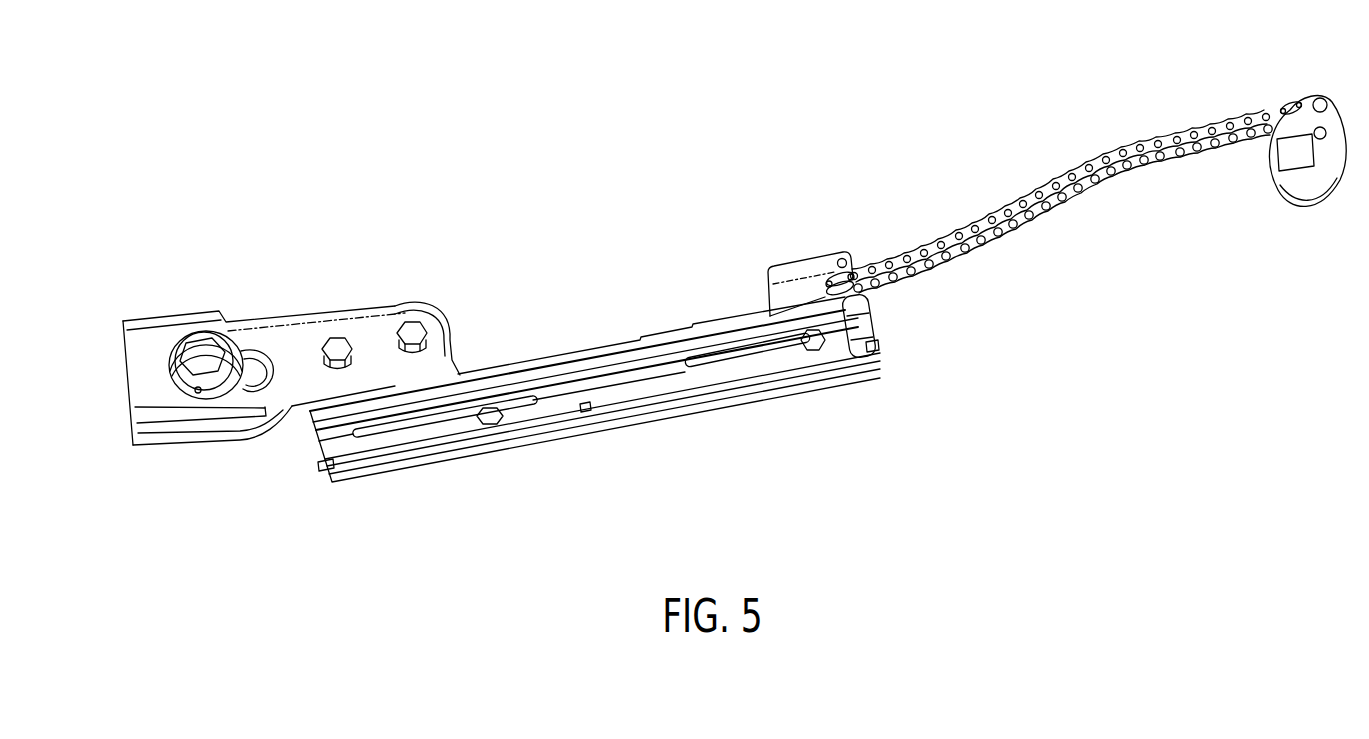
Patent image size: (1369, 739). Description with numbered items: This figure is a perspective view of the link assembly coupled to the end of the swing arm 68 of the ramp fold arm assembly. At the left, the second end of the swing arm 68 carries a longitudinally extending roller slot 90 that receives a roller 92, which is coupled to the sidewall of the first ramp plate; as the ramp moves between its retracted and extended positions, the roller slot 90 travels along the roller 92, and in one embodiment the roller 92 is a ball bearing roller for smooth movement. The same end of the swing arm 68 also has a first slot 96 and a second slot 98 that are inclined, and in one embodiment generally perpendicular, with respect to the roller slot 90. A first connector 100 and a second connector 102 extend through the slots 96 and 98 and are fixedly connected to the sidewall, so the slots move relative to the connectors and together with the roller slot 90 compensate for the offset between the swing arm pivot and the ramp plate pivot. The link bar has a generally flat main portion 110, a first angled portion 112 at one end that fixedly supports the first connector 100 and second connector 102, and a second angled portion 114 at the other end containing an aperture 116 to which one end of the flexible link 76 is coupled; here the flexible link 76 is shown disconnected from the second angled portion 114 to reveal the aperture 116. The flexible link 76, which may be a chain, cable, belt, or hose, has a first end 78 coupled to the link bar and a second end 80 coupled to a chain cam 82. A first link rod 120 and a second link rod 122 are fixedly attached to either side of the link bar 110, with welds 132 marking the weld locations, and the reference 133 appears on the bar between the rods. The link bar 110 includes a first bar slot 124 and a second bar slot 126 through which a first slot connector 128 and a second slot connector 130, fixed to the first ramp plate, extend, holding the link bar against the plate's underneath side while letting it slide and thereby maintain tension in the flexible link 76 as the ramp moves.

The swing arm 68 is at (222, 465).
The flexible link 76 is at (1040, 186).
The first end 78 is at (858, 312).
The second end 80 is at (1305, 100).
The chain cam 82 is at (1298, 172).
The roller slot 90 is at (152, 378).
The roller 92 is at (210, 352).
The first slot 96 is at (334, 343).
The second slot 98 is at (406, 322).
The first connector 100 is at (340, 357).
The second connector 102 is at (418, 337).
The main portion 110 is at (866, 330).
The first angled portion 112 is at (450, 364).
The second angled portion 114 is at (786, 276).
The aperture 116 is at (843, 262).
The first link rod 120 is at (606, 356).
The second link rod 122 is at (637, 412).
The first bar slot 124 is at (418, 422).
The second bar slot 126 is at (728, 352).
The first slot connector 128 is at (490, 422).
The second slot connector 130 is at (815, 349).
The welds 132 is at (336, 464).
The channel 133 is at (640, 380).